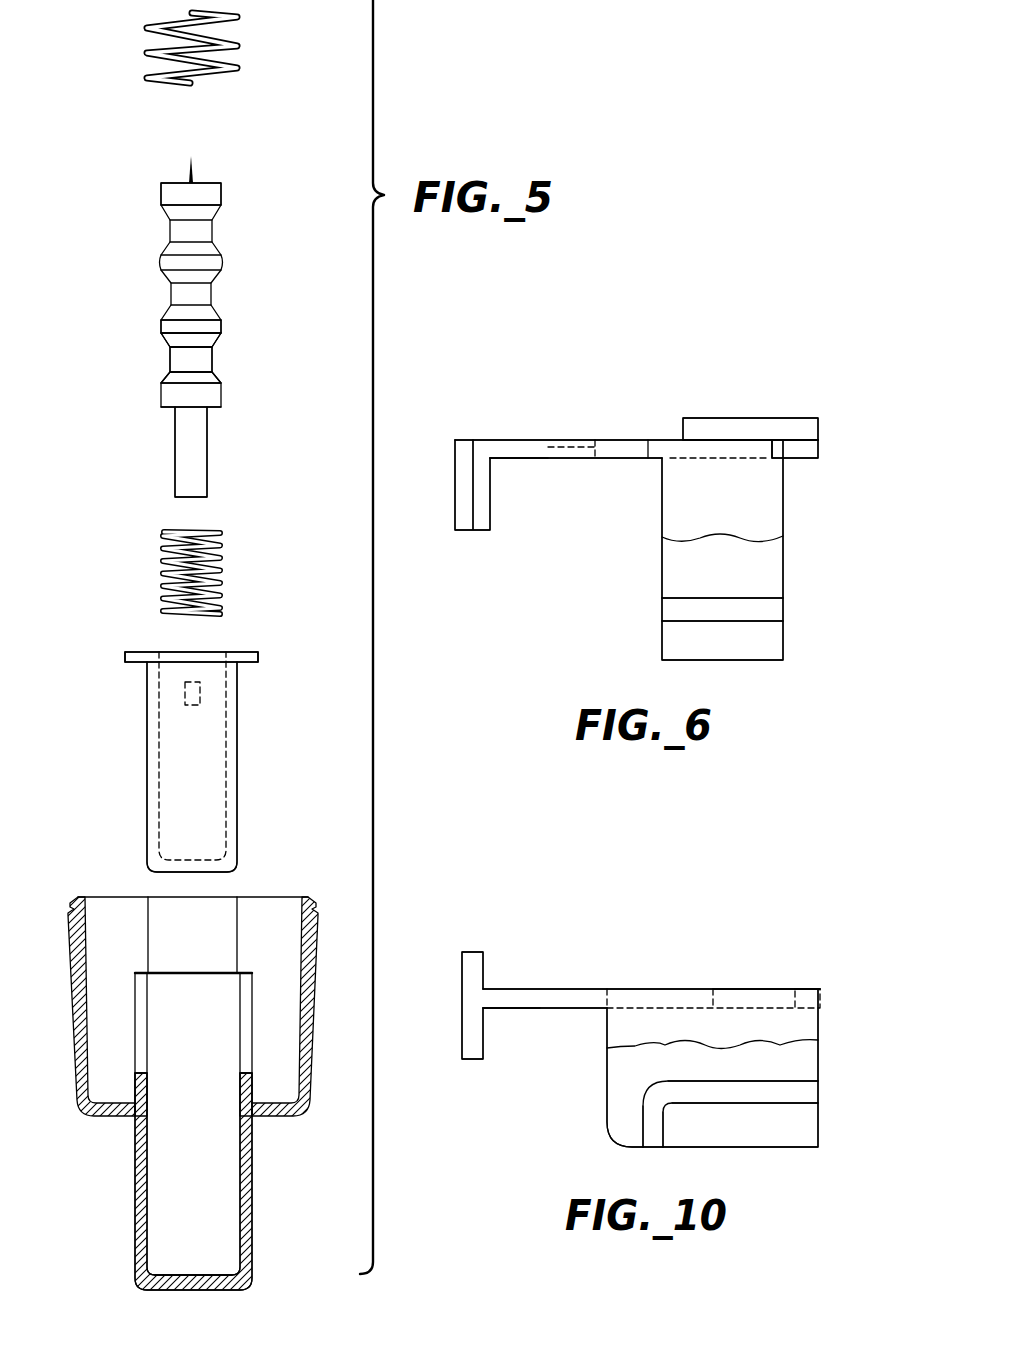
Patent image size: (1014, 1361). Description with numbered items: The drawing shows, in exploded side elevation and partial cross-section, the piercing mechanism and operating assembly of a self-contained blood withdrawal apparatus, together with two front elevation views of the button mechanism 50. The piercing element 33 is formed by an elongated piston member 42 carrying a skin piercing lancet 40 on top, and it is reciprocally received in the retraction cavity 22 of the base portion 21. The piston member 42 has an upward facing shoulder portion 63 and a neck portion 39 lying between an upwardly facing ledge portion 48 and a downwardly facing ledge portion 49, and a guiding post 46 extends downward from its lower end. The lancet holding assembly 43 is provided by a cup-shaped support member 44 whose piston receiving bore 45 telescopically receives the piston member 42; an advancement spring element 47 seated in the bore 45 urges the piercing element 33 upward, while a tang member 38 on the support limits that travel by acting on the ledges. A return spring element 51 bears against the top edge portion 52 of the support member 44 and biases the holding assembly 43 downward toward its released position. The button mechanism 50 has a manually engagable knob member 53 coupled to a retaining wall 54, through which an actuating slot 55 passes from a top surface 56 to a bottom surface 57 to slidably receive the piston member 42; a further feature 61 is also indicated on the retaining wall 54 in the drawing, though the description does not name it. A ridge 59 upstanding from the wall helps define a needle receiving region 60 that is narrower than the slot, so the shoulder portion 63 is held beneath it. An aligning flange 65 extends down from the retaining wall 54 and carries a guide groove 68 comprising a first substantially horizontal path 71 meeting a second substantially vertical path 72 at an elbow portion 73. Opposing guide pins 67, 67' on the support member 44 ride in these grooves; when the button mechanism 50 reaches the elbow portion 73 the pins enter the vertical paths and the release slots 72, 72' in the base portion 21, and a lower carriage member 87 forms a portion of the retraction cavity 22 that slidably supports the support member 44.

In FIG. 5, the base portion 21 is at (275, 1150).
In FIG. 5, the retraction cavity 22 is at (185, 1275).
In FIG. 5, the piercing element 33 is at (245, 268).
In FIG. 5, the tang member 38 is at (185, 692).
In FIG. 5, the neck portion 39 is at (182, 363).
In FIG. 5, the lancet 40 is at (197, 176).
In FIG. 5, the piston member 42 is at (180, 341).
In FIG. 5, the lancet holding assembly 43 is at (127, 774).
In FIG. 5, the cup-shaped support member 44 is at (238, 818).
In FIG. 5, the piston receiving bore 45 is at (222, 760).
In FIG. 5, the guiding post 46 is at (210, 452).
In FIG. 5, the advancement spring element 47 is at (223, 578).
In FIG. 5, the upwardly facing ledge portion 48 is at (221, 380).
In FIG. 5, the downwardly facing ledge portion 49 is at (222, 347).
In FIG. 6, the button mechanism 50 is at (565, 382).
In FIG. 10, the button mechanism 50 is at (679, 964).
In FIG. 5, the return spring element 51 is at (246, 42).
In FIG. 5, the top edge portion 52 is at (244, 652).
In FIG. 6, the knob member 53 is at (455, 455).
In FIG. 10, the knob member 53 is at (462, 975).
In FIG. 6, the retaining wall 54 is at (586, 462).
In FIG. 10, the retaining wall 54 is at (586, 1012).
In FIG. 6, the actuating slot 55 is at (795, 449).
In FIG. 10, the actuating slot 55 is at (795, 1000).
In FIG. 6, the top surface 56 is at (782, 440).
In FIG. 10, the top surface 56 is at (794, 989).
In FIG. 6, the bottom surface 57 is at (536, 462).
In FIG. 10, the bottom surface 57 is at (540, 1012).
In FIG. 6, the ridge 59 is at (703, 418).
In FIG. 6, the needle receiving region 60 is at (760, 428).
In FIG. 10, the needle receiving region 60 is at (753, 1000).
In FIG. 6, the notch 61 is at (648, 440).
In FIG. 10, the notch 61 is at (660, 992).
In FIG. 5, the shoulder portion 63 is at (171, 182).
In FIG. 6, the aligning flange 65 is at (780, 569).
In FIG. 10, the aligning flange 65 is at (712, 1068).
In FIG. 5, the guide pin 67 is at (101, 670).
In FIG. 5, the guide pin 67' is at (287, 670).
In FIG. 6, the guide groove 68 is at (778, 612).
In FIG. 10, the guide groove 68 is at (785, 1093).
In FIG. 6, the first substantially horizontal path 71 is at (710, 621).
In FIG. 10, the first substantially horizontal path 71 is at (712, 1102).
In FIG. 5, the second substantially vertical path 72 is at (90, 1072).
In FIG. 10, the second substantially vertical path 72 is at (613, 1139).
In FIG. 5, the second substantially vertical path 72' is at (296, 1072).
In FIG. 6, the elbow portion 73 is at (662, 621).
In FIG. 10, the elbow portion 73 is at (657, 1100).
In FIG. 5, the lower carriage member 87 is at (246, 1276).